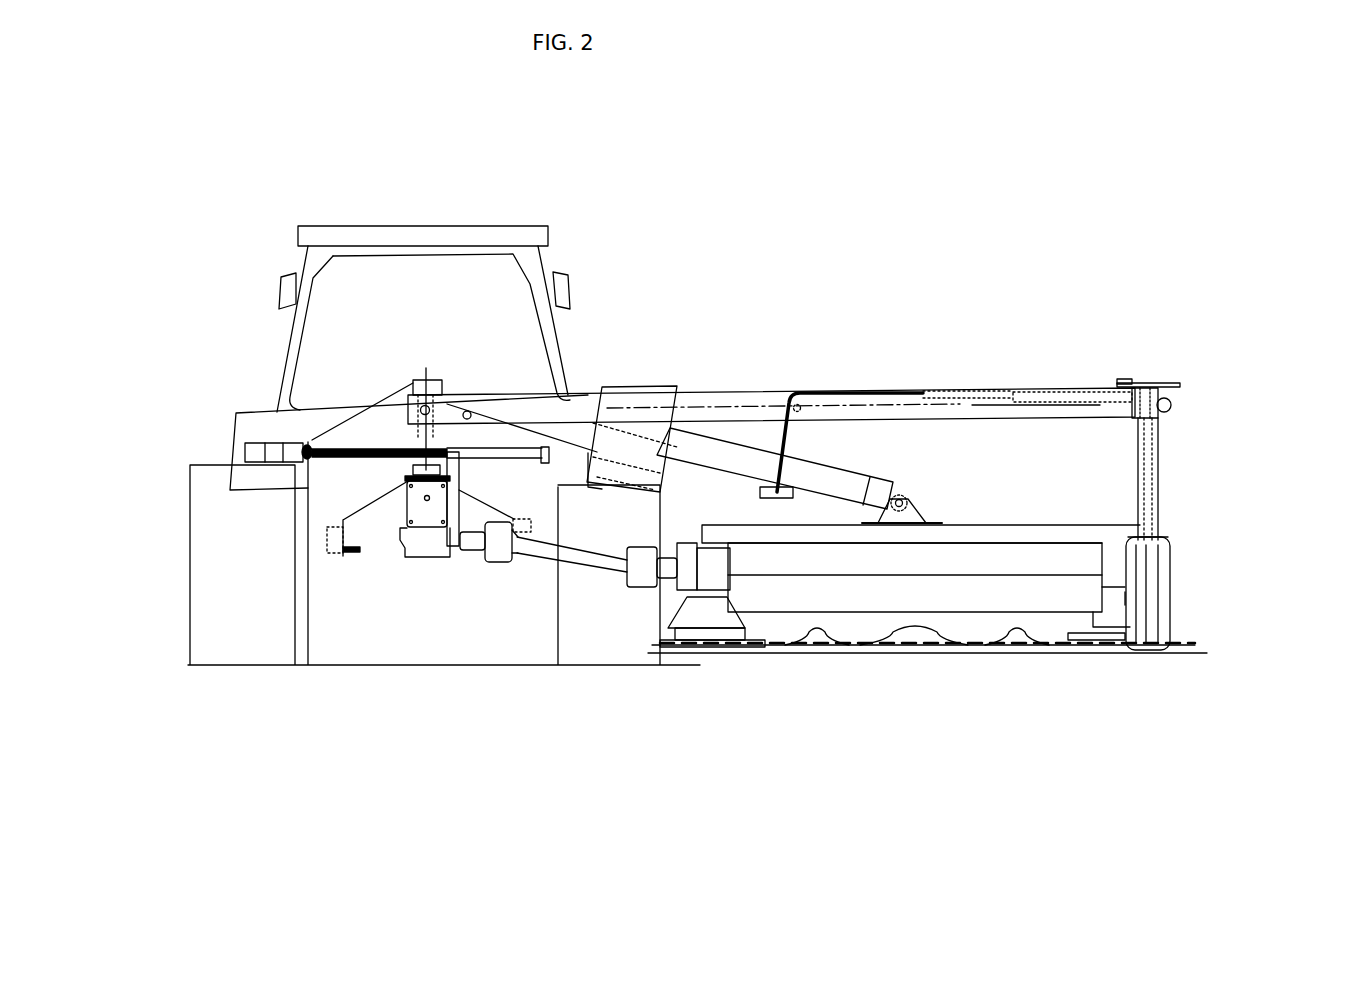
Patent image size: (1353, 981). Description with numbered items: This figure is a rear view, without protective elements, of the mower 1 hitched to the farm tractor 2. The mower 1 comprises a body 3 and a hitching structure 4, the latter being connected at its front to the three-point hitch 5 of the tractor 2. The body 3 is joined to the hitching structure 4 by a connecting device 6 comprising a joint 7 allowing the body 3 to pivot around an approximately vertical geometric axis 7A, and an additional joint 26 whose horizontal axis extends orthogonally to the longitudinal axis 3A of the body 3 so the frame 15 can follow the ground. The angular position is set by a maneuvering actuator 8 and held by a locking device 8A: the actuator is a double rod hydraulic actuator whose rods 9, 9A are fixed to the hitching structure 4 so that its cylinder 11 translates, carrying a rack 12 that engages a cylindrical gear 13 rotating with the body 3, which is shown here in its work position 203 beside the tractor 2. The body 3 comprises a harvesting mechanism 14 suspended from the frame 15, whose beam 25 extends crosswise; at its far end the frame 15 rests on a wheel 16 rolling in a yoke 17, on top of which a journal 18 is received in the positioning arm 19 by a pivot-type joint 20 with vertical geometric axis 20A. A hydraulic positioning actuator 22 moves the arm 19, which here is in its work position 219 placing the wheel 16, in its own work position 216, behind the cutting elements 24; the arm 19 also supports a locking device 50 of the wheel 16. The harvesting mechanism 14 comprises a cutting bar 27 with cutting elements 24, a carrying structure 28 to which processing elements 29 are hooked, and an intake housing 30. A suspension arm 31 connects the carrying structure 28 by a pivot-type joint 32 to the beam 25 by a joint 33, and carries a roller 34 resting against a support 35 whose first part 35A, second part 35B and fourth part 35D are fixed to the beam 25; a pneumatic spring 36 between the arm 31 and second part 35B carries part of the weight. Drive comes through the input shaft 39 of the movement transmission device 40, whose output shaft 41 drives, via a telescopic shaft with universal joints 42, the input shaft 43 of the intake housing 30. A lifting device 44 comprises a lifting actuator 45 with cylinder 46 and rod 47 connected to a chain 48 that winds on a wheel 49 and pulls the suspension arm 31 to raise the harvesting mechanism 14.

The mower 1 is at (1062, 282).
The farm tractor 2 is at (310, 233).
The body 3 is at (993, 390).
The longitudinal axis 3A is at (973, 408).
The hitching structure 4 is at (396, 391).
The three-point hitch 5 is at (406, 441).
The connecting device 6 is at (438, 383).
The joint 7 is at (414, 382).
The geometric axis 7A is at (442, 382).
The maneuvering actuator 8 is at (330, 462).
The locking device 8A is at (334, 462).
The rod 9 is at (308, 460).
The rod 9A is at (515, 424).
The cylinder 11 is at (357, 443).
The rack 12 is at (335, 432).
The cylindrical gear 13 is at (413, 463).
The harvesting mechanism 14 is at (1022, 655).
The frame 15 is at (873, 388).
The wheel 16 is at (1160, 624).
The yoke 17 is at (1167, 542).
The journal 18 is at (1159, 470).
The positioning arm 19 is at (1159, 442).
The pivot-type joint 20 is at (1134, 443).
The geometric axis 20A is at (1146, 488).
The hydraulic positioning actuator 22 is at (1172, 405).
The cutting elements 24 is at (708, 650).
The beam 25 is at (1100, 425).
The additional joint 26 is at (429, 409).
The cutting bar 27 is at (652, 650).
The carrying structure 28 is at (1007, 523).
The processing elements 29 is at (912, 567).
The intake housing 30 is at (712, 567).
The suspension arm 31 is at (827, 474).
The pivot-type joint 32 is at (912, 500).
The joint 33 is at (473, 414).
The roller 34 is at (599, 457).
The support 35 is at (610, 388).
The first part 35A is at (655, 448).
The second part 35B is at (646, 493).
The fourth part 35D is at (672, 392).
The pneumatic spring 36 is at (660, 475).
The input shaft 39 is at (429, 502).
The movement transmission device 40 is at (415, 553).
The output shaft 41 is at (466, 550).
The telescopic shaft with universal joints 42 is at (542, 563).
The input shaft 43 is at (663, 585).
The lifting device 44 is at (928, 390).
The lifting actuator 45 is at (1053, 392).
The cylinder 46 is at (1095, 392).
The rod 47 is at (951, 392).
The chain 48 is at (845, 392).
The wheel 49 is at (794, 403).
The locking device 50 is at (1175, 382).
The work position 203 is at (1145, 286).
The work position 216 is at (1288, 655).
The work position 219 is at (1290, 413).